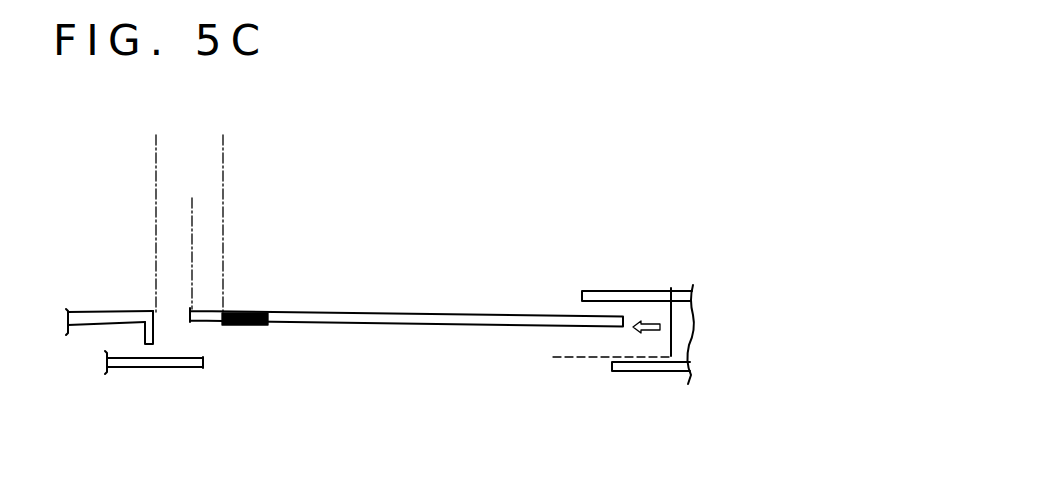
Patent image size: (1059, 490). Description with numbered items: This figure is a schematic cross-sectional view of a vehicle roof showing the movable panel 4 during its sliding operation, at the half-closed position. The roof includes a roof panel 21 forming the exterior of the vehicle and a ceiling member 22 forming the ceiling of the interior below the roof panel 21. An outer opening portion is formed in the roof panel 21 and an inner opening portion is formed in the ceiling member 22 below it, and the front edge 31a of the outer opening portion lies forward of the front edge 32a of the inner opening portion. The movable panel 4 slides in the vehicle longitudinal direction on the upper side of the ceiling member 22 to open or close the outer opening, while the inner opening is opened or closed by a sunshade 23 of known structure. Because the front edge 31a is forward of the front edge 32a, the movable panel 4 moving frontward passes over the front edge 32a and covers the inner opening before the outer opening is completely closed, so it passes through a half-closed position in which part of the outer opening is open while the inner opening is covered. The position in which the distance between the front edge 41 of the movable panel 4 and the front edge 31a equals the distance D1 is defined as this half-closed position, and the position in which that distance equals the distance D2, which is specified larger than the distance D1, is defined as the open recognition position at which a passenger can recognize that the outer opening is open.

The roof panel 21 is at (87, 313).
The front edge of the outer opening portion 31a is at (157, 316).
The movable panel 4 is at (406, 313).
The front edge of the movable panel 41 is at (197, 311).
The ceiling member 22 is at (167, 367).
The front edge of the inner opening portion 32a is at (205, 362).
The sunshade 23 is at (670, 290).
The distance D1 is at (192, 212).
The distance D2 is at (223, 157).